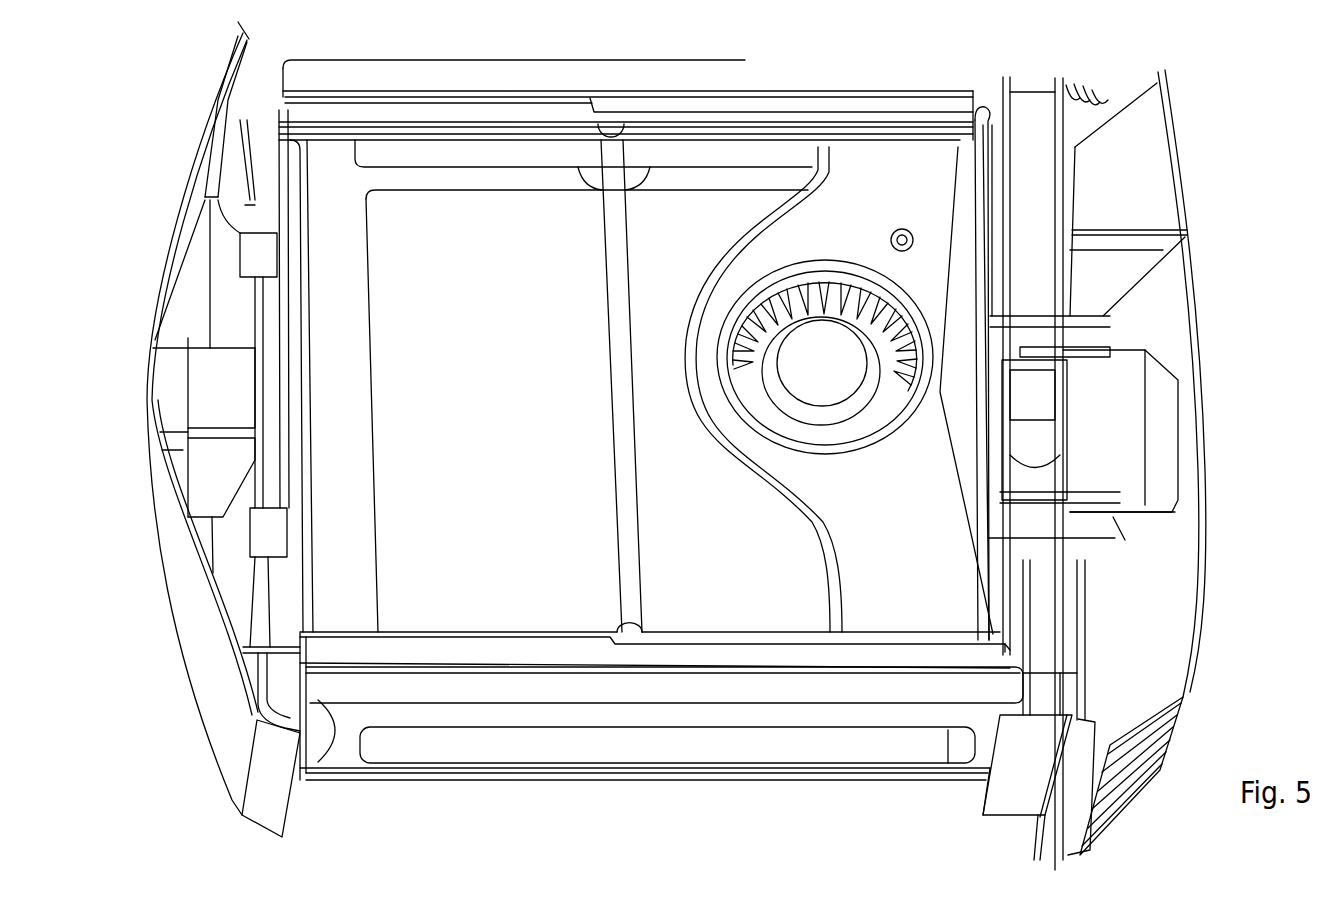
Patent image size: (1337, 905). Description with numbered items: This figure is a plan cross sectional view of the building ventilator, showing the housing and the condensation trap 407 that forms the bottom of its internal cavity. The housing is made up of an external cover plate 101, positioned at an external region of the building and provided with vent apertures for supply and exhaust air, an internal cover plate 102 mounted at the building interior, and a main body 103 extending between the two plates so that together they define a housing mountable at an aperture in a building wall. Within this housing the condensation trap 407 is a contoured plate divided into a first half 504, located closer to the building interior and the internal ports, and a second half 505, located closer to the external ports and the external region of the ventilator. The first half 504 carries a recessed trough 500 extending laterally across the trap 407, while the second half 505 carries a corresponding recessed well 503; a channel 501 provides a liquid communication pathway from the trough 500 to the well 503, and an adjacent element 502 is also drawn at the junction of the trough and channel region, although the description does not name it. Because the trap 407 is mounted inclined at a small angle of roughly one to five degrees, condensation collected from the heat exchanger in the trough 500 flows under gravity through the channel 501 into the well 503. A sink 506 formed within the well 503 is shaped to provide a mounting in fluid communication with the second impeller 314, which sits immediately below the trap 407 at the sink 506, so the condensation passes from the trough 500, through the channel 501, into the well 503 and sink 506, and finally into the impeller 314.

The external cover plate 101 is at (1215, 392).
The internal cover plate 102 is at (193, 602).
The main body 103 is at (600, 738).
The second impeller 314 is at (840, 300).
The condensation trap 407 is at (732, 650).
The recessed trough 500 is at (352, 425).
The channel 501 is at (427, 183).
The central divider post 502 is at (592, 197).
The recessed well 503 is at (878, 172).
The first half 504 is at (510, 561).
The second half 505 is at (756, 561).
The sink 506 is at (905, 415).